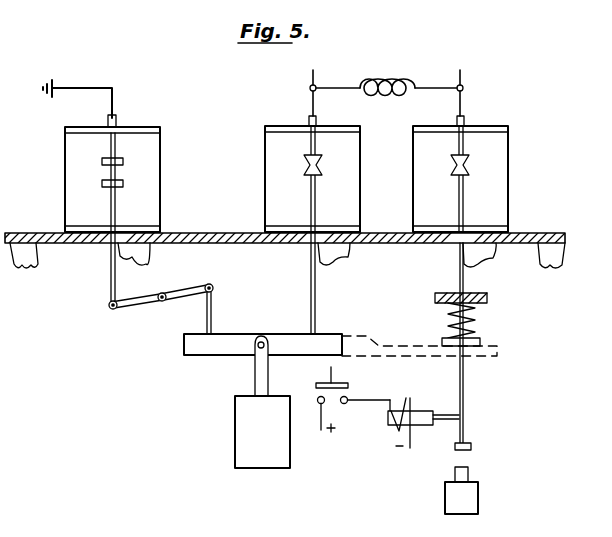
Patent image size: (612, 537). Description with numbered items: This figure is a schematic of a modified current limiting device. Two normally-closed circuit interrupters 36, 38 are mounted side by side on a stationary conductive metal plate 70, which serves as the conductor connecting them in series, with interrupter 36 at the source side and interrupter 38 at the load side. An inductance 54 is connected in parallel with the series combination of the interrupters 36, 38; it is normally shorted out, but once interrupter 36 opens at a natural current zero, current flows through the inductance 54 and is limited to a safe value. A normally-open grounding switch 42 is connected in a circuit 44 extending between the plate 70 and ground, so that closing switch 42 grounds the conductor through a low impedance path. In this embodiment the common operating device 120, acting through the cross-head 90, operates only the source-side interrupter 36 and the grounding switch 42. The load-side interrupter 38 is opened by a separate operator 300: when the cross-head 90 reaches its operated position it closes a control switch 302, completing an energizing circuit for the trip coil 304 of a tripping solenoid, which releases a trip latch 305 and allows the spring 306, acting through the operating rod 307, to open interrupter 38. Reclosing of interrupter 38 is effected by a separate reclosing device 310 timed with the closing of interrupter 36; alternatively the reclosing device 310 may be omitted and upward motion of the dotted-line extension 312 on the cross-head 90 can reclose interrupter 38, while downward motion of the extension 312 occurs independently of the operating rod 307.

The circuit 44 is at (88, 88).
The normally-open switch 42 is at (70, 156).
The circuit interrupter 36 is at (270, 156).
The circuit interrupter 38 is at (500, 150).
The inductance 54 is at (404, 82).
The stationary conductive metal plate 70 is at (220, 243).
The cross-head 90 is at (280, 342).
The common operating device 120 is at (243, 421).
The separate operator 300 is at (520, 386).
The control switch 302 is at (316, 396).
The trip coil 304 is at (392, 422).
The trip latch 305 is at (452, 412).
The spring 306 is at (478, 314).
The operating rod 307 is at (466, 421).
The separate reclosing device 310 is at (473, 497).
The extension 312 is at (397, 346).